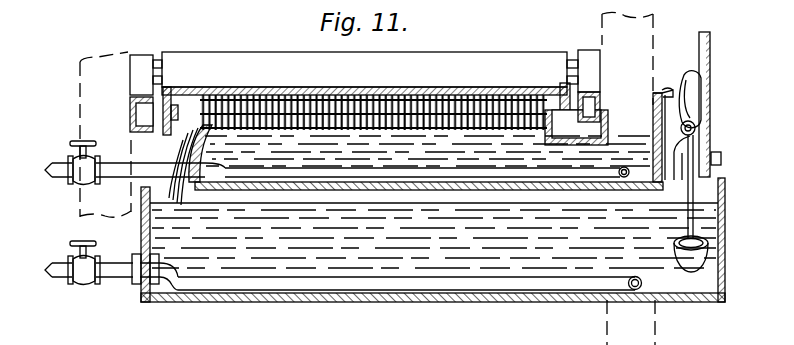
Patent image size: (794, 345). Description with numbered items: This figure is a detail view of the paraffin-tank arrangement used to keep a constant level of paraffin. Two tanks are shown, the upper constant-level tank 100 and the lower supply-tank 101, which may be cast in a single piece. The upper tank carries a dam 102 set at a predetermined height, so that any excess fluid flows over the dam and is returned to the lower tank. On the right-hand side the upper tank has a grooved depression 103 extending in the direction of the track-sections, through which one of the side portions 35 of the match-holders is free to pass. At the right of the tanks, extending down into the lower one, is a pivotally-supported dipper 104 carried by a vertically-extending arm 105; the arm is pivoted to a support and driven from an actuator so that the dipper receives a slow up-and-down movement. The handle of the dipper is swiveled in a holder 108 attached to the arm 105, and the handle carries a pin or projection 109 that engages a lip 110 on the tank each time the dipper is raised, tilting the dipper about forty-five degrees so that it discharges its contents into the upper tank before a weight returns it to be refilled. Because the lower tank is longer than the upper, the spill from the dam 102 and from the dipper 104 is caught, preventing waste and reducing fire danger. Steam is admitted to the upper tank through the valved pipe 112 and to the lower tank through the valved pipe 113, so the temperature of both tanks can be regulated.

The side portion of the match-holder 35 is at (553, 126).
The constant-level tank 100 is at (338, 147).
The supply-tank 101 is at (350, 258).
The dam 102 is at (182, 139).
The grooved depression 103 is at (606, 136).
The dipper 104 is at (707, 246).
The vertically-extending arm 105 is at (707, 82).
The holder 108 is at (701, 114).
The pin or projection 109 is at (710, 142).
The lip 110 is at (665, 92).
The valved pipe 112 is at (63, 166).
The valved pipe 113 is at (63, 266).